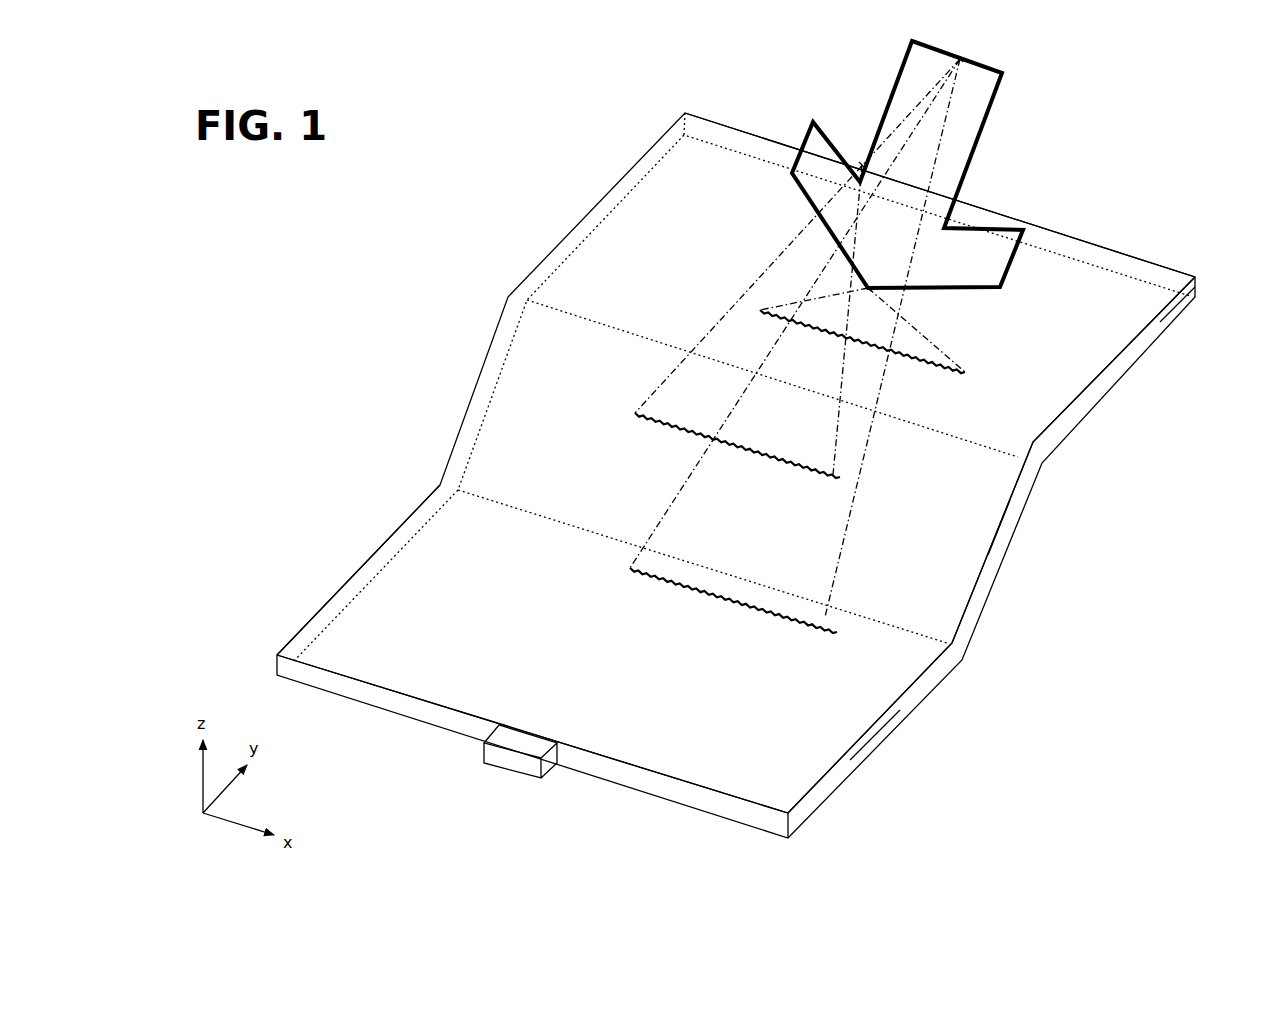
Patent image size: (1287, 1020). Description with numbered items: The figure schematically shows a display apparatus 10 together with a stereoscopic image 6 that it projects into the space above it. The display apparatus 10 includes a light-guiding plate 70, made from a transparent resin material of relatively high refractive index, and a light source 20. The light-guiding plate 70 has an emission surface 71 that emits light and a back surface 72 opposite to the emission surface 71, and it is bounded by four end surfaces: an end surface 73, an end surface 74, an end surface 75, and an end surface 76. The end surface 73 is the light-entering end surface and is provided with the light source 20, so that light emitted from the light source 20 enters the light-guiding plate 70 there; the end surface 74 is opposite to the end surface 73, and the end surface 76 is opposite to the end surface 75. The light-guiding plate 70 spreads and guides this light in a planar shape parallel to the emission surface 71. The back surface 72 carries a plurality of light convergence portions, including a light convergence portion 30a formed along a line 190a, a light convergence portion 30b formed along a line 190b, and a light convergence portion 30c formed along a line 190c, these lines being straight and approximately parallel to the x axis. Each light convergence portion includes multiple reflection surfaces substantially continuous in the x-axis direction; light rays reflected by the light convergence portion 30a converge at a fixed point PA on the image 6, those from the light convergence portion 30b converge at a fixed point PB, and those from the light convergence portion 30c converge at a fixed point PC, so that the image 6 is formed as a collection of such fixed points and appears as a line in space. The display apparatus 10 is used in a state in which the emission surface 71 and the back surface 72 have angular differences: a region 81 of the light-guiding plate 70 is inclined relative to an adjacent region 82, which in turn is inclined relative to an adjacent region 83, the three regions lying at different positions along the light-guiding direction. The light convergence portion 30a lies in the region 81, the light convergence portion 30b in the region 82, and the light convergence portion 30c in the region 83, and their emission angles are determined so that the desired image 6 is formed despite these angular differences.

The display apparatus 10 is at (1243, 98).
The light-guiding plate 70 is at (1132, 253).
The end surface 74 is at (792, 150).
The emission surface 71 is at (1122, 342).
The back surface 72 is at (1055, 450).
The end surface 76 is at (898, 718).
The end surface 75 is at (293, 627).
The end surface 73 is at (417, 713).
The region 81 is at (1174, 324).
The region 82 is at (1003, 548).
The region 83 is at (875, 752).
The light source 20 is at (480, 755).
The image 6 is at (985, 137).
The fixed point PA is at (873, 284).
The fixed point PB is at (861, 160).
The fixed point PC is at (965, 57).
The line 190a is at (760, 310).
The line 190b is at (635, 413).
The line 190c is at (630, 568).
The light convergence portion 30a is at (803, 331).
The light convergence portion 30b is at (676, 437).
The light convergence portion 30c is at (672, 592).